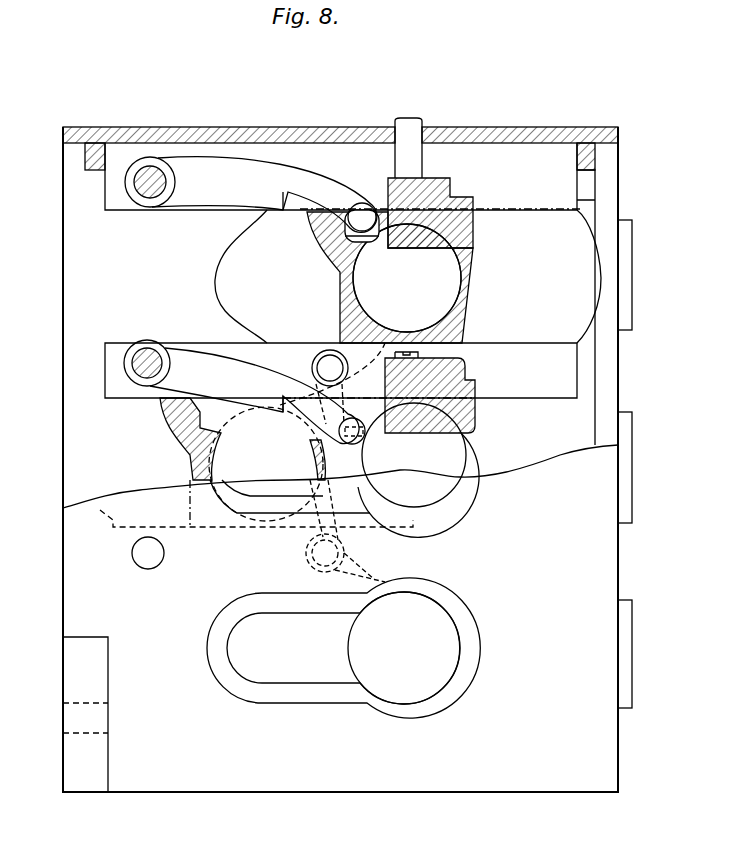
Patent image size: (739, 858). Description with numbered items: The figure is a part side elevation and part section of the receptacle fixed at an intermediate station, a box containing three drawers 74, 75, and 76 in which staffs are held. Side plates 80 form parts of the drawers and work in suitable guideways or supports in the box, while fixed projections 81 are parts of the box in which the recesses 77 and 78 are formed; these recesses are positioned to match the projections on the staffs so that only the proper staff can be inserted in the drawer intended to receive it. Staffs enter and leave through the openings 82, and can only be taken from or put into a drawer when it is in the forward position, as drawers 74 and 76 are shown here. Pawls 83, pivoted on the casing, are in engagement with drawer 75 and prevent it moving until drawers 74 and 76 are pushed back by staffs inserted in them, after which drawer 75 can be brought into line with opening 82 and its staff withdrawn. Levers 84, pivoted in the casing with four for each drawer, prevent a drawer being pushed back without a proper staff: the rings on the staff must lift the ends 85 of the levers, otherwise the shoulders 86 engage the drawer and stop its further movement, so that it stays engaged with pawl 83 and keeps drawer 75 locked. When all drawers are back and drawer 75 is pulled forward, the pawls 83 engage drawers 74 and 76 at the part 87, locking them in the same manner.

The drawer 74 is at (353, 278).
The drawer 75 is at (203, 455).
The drawer 76 is at (350, 637).
The recess 77 is at (362, 237).
The recess 78 is at (366, 432).
The side plates 80 is at (347, 459).
The fixed projections 81 is at (473, 210).
The openings 82 is at (413, 553).
The pawls 83 is at (313, 358).
The levers 84 is at (250, 300).
The ends of levers 85 is at (378, 226).
The shoulders 86 is at (283, 210).
The part of drawer engaged by pawl 87 is at (462, 332).